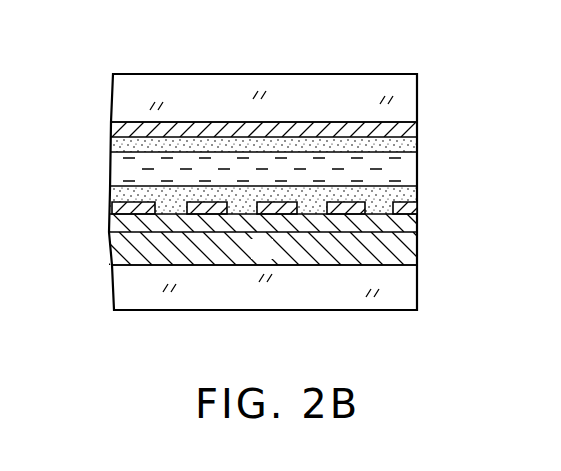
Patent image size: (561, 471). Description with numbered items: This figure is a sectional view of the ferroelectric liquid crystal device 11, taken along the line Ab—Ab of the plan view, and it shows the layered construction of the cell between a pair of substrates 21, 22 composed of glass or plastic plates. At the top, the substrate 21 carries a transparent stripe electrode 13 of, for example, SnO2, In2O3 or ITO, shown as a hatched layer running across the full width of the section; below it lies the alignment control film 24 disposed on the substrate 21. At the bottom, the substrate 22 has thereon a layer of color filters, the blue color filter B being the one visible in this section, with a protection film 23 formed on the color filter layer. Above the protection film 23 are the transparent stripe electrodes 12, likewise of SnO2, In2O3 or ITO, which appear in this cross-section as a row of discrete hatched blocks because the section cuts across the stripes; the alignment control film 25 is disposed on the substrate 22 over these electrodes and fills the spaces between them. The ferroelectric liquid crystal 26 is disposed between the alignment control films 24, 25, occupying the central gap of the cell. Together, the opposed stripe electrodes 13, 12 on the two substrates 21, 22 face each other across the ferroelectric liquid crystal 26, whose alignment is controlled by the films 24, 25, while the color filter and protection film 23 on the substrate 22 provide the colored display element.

The ferroelectric liquid crystal device 11 is at (333, 73).
The substrate 21 is at (226, 74).
The transparent stripe electrode 13 is at (413, 131).
The alignment control film 24 is at (413, 147).
The ferroelectric liquid crystal 26 is at (415, 175).
The alignment control film 25 is at (415, 197).
The transparent stripe electrode 12 is at (421, 208).
The protection film 23 is at (421, 222).
The substrate 22 is at (220, 304).